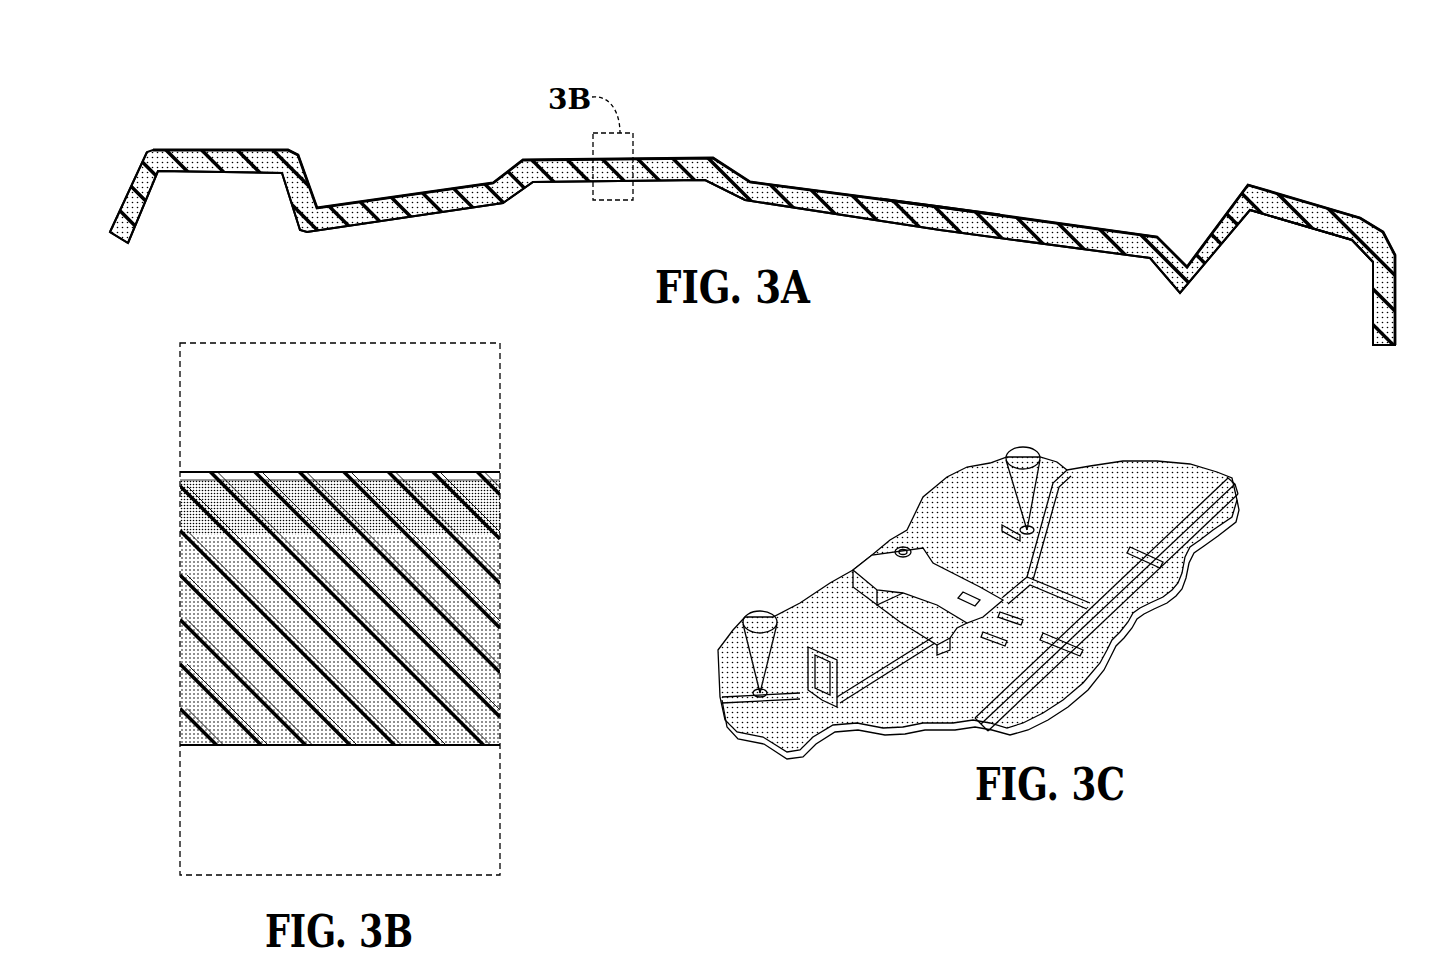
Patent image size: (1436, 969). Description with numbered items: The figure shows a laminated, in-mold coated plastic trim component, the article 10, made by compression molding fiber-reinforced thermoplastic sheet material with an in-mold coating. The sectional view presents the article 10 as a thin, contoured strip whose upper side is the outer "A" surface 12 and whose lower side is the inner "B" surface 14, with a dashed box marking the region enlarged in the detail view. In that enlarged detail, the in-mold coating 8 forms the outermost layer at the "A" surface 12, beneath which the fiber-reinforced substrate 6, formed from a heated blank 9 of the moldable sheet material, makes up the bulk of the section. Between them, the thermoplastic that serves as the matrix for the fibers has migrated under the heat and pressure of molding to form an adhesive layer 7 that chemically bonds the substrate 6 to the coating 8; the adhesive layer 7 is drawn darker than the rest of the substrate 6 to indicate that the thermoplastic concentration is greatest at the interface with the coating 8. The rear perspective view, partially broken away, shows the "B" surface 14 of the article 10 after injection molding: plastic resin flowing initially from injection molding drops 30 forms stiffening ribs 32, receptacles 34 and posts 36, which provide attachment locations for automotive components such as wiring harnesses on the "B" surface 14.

In FIG. 3A, the in-mold coated plastic article 10 is at (984, 70).
In FIG. 3A, the substrate 6 is at (1012, 240).
In FIG. 3B, the substrate 6 is at (500, 612).
In FIG. 3B, the adhesive layer 7 is at (512, 537).
In FIG. 3A, the in-mold coating 8 is at (985, 208).
In FIG. 3B, the in-mold coating 8 is at (325, 472).
In FIG. 3A, the heated blank 9 is at (1305, 224).
In FIG. 3A, the outer "A" surface 12 is at (950, 199).
In FIG. 3B, the outer "A" surface 12 is at (200, 470).
In FIG. 3A, the inner "B" surface 14 is at (763, 206).
In FIG. 3B, the inner "B" surface 14 is at (455, 750).
In FIG. 3C, the inner "B" surface 14 is at (1148, 473).
In FIG. 3C, the injection molding drop 30 is at (727, 655).
In FIG. 3C, the stiffening rib 32 is at (1197, 518).
In FIG. 3C, the receptacle 34 is at (965, 630).
In FIG. 3C, the post 36 is at (793, 700).